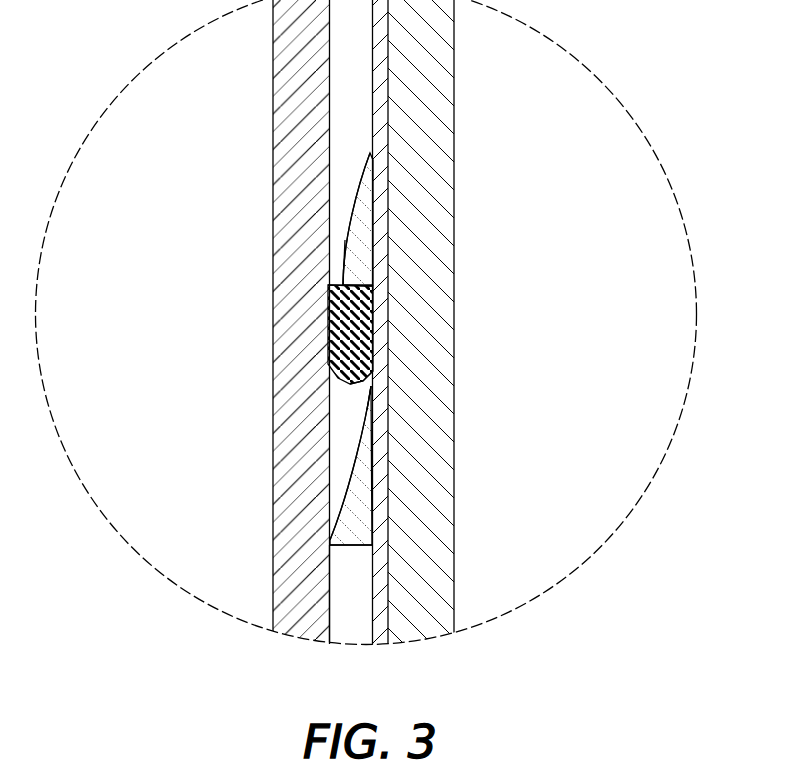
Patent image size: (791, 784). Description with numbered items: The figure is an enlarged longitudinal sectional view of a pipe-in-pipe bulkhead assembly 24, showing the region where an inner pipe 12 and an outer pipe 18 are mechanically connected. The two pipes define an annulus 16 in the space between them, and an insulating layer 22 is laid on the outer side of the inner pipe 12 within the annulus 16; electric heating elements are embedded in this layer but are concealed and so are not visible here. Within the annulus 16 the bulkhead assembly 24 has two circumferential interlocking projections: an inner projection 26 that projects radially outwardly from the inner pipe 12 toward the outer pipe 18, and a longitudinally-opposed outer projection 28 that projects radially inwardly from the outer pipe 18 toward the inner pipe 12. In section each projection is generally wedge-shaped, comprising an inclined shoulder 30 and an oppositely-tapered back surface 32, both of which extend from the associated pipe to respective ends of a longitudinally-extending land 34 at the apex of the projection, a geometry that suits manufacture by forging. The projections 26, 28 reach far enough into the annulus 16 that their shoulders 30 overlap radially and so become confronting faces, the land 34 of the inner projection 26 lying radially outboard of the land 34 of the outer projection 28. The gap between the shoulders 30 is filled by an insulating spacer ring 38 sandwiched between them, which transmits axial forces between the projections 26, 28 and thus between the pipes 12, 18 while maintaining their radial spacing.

The inner pipe 12 is at (421, 632).
The annulus 16 is at (357, 636).
The outer pipe 18 is at (302, 632).
The insulating layer 22 is at (388, 97).
The bulkhead assembly 24 is at (233, 133).
The inner projection 26 is at (363, 202).
The outer projection 28 is at (358, 408).
The inclined shoulder 30 is at (365, 288).
The back surface 32 is at (352, 190).
The land 34 is at (347, 257).
The spacer ring 38 is at (340, 330).